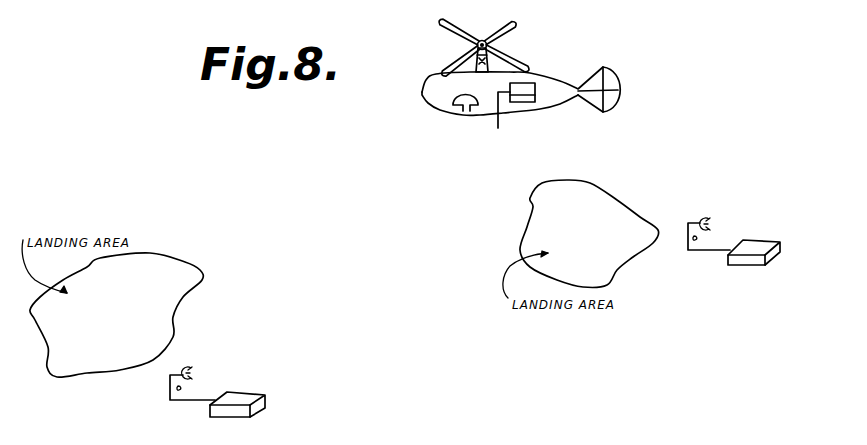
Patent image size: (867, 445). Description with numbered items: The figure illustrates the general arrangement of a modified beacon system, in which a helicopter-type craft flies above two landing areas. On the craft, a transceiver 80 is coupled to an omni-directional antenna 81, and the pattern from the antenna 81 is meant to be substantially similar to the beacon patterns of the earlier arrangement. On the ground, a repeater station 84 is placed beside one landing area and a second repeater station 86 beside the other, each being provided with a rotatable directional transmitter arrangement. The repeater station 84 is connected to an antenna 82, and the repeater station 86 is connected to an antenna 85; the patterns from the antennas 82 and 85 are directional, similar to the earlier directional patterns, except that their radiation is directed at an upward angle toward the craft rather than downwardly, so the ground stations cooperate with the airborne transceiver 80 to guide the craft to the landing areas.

The transceiver 80 is at (530, 102).
The omni-directional antenna 81 is at (508, 115).
The antenna 82 is at (168, 380).
The repeater station 84 is at (243, 398).
The antenna 85 is at (683, 242).
The repeater station 86 is at (772, 205).